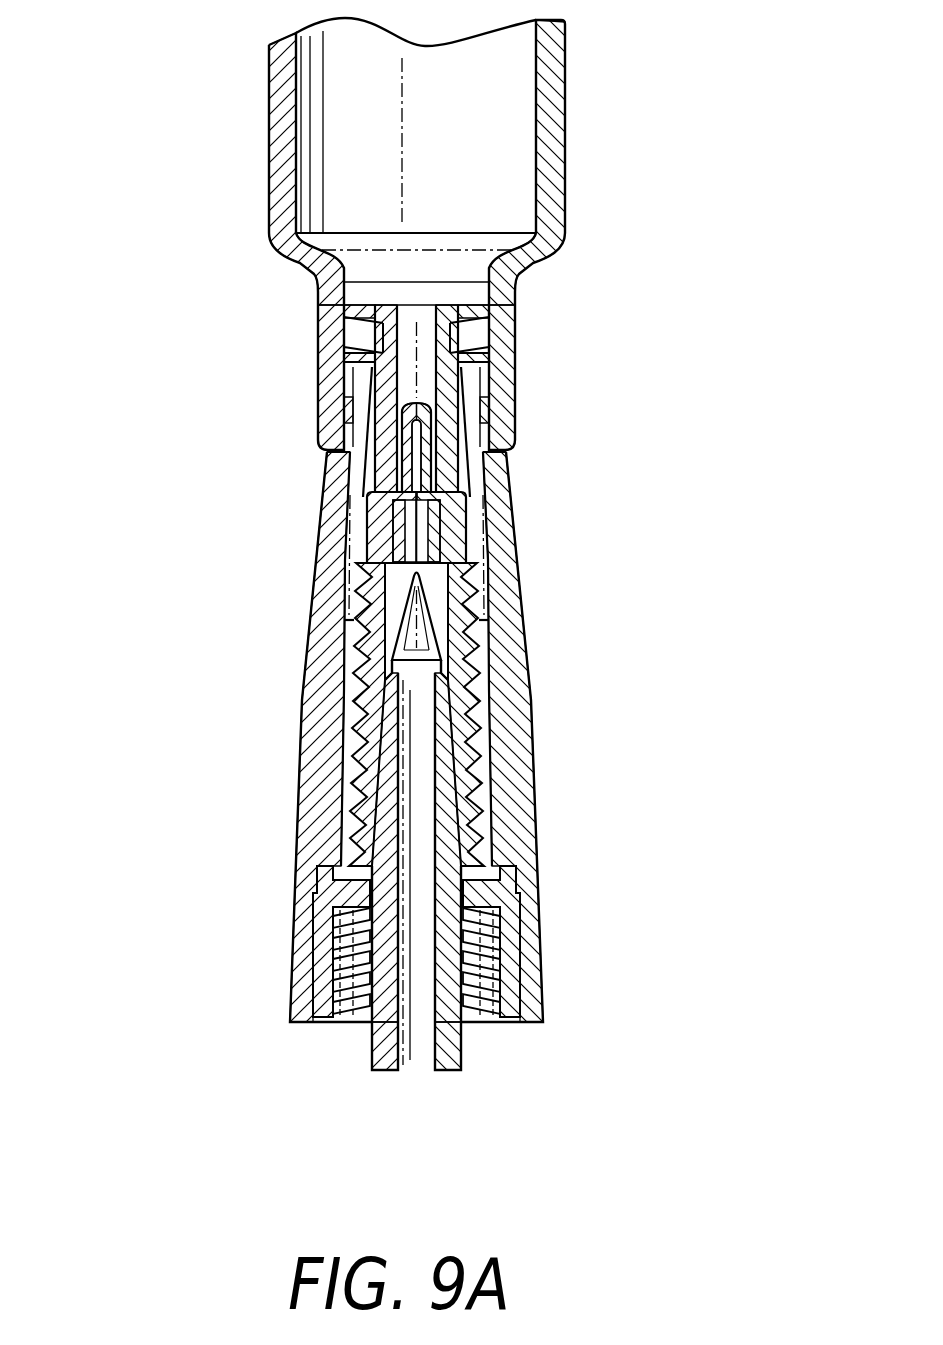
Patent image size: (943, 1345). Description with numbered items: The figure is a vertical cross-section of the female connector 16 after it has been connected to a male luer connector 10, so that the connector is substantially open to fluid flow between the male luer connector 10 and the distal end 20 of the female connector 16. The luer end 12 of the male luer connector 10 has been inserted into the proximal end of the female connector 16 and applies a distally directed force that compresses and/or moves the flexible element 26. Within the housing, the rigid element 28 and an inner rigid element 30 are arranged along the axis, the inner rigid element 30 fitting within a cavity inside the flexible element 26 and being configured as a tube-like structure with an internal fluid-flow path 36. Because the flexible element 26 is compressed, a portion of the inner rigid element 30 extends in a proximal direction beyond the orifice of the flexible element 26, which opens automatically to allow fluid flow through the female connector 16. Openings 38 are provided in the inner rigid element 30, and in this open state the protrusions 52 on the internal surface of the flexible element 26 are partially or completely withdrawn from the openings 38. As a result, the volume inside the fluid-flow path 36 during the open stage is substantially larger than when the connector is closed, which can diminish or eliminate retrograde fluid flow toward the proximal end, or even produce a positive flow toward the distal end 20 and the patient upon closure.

The male luer connector 10 is at (210, 113).
The luer end 12 is at (375, 488).
The female connector 16 is at (626, 601).
The distal end 20 is at (338, 1062).
The flexible element 26 is at (368, 612).
The rigid element 28 is at (413, 400).
The inner rigid element 30 is at (457, 822).
The fluid-flow path 36 is at (425, 878).
The openings 38 is at (385, 577).
The protrusions 52 is at (355, 685).